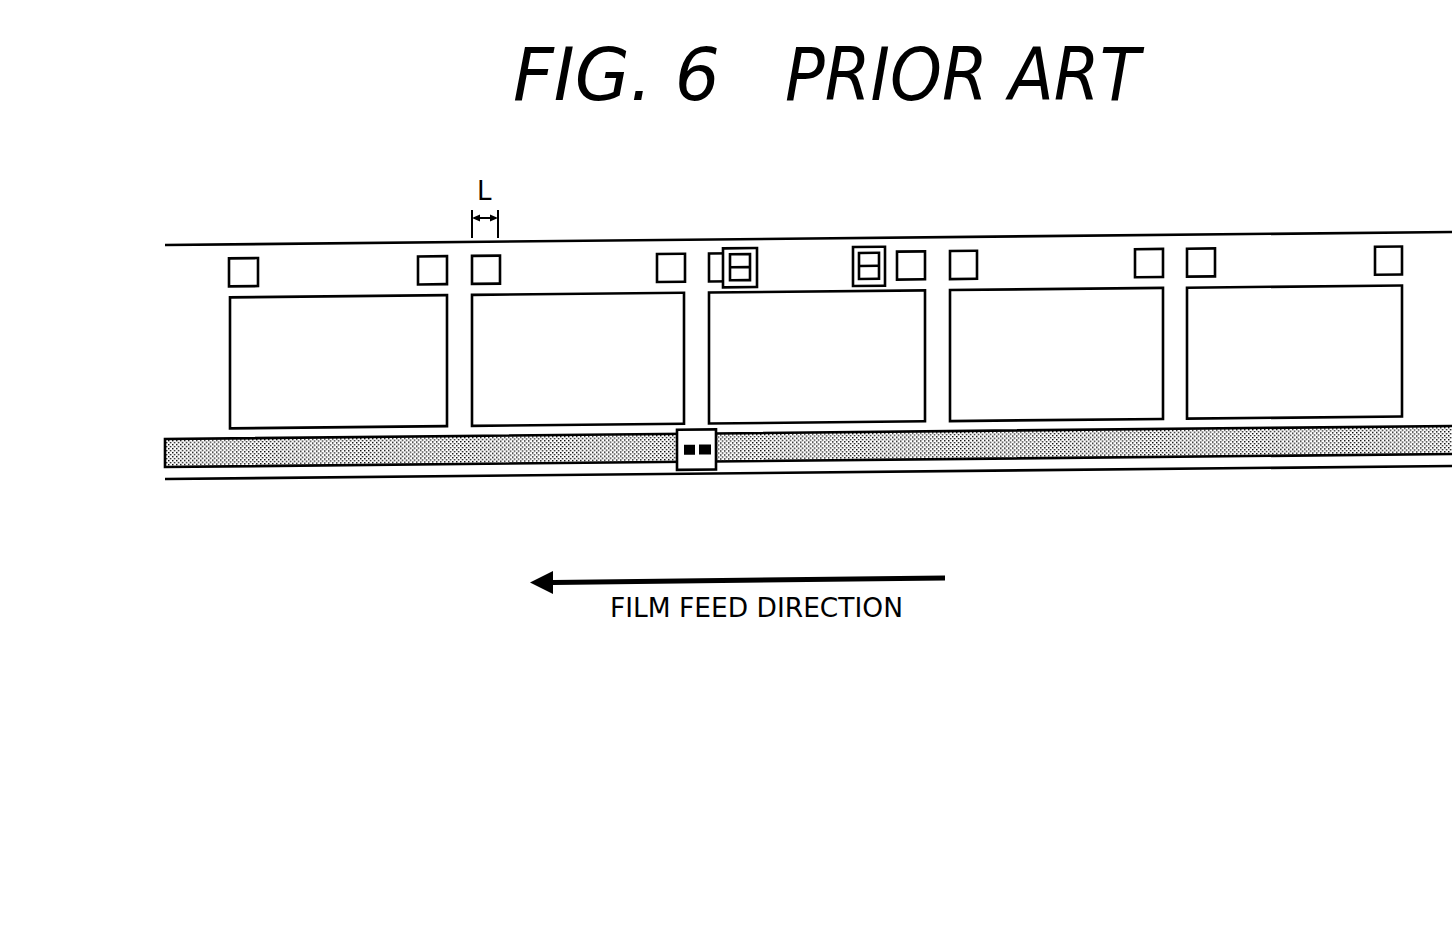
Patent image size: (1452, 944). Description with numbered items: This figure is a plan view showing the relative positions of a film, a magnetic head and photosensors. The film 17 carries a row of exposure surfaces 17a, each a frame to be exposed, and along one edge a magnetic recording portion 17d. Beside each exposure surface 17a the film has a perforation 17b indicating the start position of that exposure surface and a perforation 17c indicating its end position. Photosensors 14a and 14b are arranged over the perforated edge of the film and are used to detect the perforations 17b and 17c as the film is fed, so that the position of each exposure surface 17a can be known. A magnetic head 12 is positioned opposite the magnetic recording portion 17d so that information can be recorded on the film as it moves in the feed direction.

The magnetic head 12 is at (703, 462).
The photosensor 14a is at (740, 250).
The photosensor 14b is at (870, 250).
The film 17 is at (975, 458).
The exposure surface 17a is at (357, 297).
The perforation 17b is at (248, 258).
The perforation 17c is at (436, 257).
The magnetic recording portion 17d is at (345, 468).